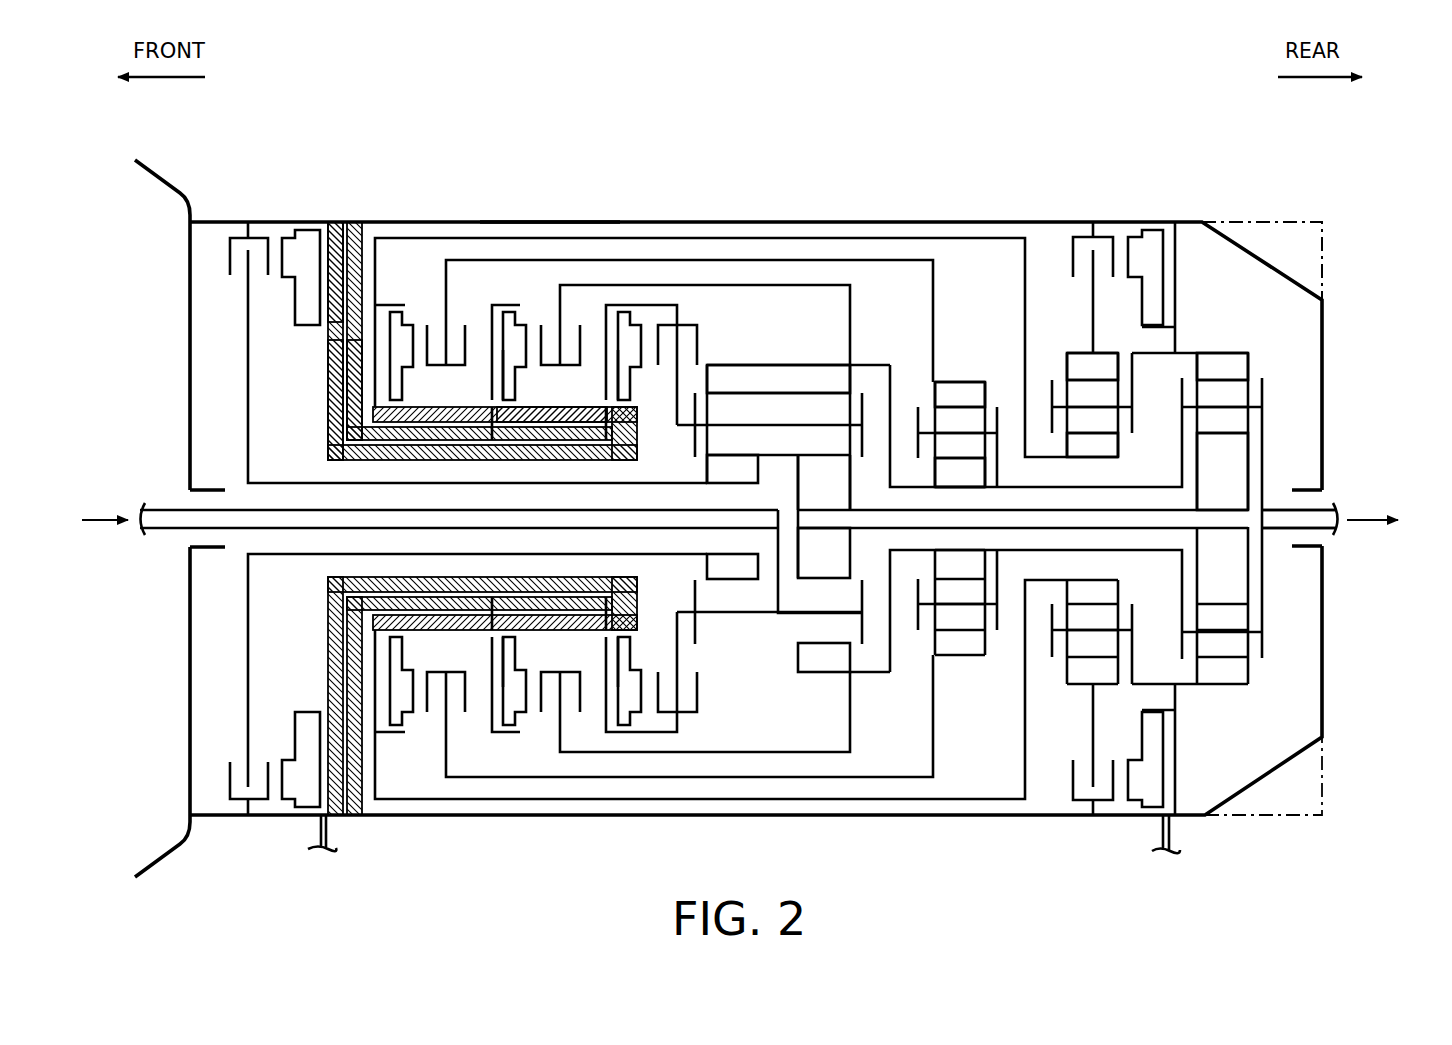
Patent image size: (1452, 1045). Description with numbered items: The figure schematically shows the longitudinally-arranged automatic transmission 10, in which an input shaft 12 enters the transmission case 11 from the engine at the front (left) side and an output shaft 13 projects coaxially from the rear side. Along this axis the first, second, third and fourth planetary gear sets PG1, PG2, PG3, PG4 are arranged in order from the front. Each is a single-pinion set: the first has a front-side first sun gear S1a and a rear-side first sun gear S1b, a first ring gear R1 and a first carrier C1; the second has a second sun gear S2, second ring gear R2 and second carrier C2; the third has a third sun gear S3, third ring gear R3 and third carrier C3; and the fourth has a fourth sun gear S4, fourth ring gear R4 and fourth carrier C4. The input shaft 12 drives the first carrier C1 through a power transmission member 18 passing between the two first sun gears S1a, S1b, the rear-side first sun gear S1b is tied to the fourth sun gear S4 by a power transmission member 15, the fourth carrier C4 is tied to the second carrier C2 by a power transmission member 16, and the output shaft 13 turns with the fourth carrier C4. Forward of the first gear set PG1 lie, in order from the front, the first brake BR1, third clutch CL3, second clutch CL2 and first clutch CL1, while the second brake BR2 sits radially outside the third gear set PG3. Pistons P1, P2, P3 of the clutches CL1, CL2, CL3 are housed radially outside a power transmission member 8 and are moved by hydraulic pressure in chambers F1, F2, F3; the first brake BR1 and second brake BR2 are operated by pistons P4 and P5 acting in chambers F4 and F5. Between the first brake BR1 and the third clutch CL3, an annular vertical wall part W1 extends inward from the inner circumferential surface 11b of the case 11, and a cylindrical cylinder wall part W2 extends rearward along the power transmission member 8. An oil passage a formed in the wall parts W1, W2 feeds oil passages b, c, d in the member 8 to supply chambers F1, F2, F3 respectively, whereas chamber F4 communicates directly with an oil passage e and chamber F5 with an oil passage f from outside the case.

The automatic transmission 10 is at (1300, 205).
The transmission case 11 is at (902, 219).
The inner circumferential surface 11b is at (520, 233).
The input shaft 12 is at (172, 510).
The output shaft 13 is at (1320, 507).
The power transmission member 15 is at (897, 508).
The power transmission member 16 is at (1043, 488).
The power transmission member 18 is at (782, 597).
The power transmission member 8 is at (578, 422).
The oil passage a is at (338, 420).
The oil passage b is at (634, 422).
The oil passage c is at (501, 416).
The oil passage d is at (389, 416).
The oil passage e is at (330, 834).
The oil passage f is at (1173, 832).
The vertical wall part W1 is at (355, 253).
The cylinder wall part W2 is at (423, 456).
The piston P1 is at (627, 345).
The piston P2 is at (507, 345).
The piston P3 is at (381, 345).
The piston P4 is at (287, 255).
The piston P5 is at (1133, 255).
The hydraulic pressure chamber F1 is at (614, 352).
The hydraulic pressure chamber F2 is at (497, 352).
The hydraulic pressure chamber F3 is at (380, 381).
The hydraulic pressure chamber F4 is at (323, 250).
The hydraulic pressure chamber F5 is at (1171, 250).
The first clutch CL1 is at (691, 314).
The second clutch CL2 is at (555, 317).
The third clutch CL3 is at (437, 312).
The first brake BR1 is at (246, 279).
The second brake BR2 is at (1062, 251).
The first planetary gear set PG1 is at (753, 357).
The second planetary gear set PG2 is at (962, 374).
The third planetary gear set PG3 is at (1074, 346).
The fourth planetary gear set PG4 is at (1215, 339).
The first ring gear R1 is at (778, 378).
The second ring gear R2 is at (960, 396).
The third ring gear R3 is at (1092, 368).
The fourth ring gear R4 is at (1222, 368).
The front-side first sun gear S1a is at (732, 517).
The rear-side first sun gear S1b is at (824, 516).
The second sun gear S2 is at (960, 472).
The third sun gear S3 is at (1092, 447).
The fourth sun gear S4 is at (1222, 471).
The first carrier C1 is at (783, 533).
The second carrier C2 is at (970, 504).
The third carrier C3 is at (1124, 518).
The fourth carrier C4 is at (1233, 504).